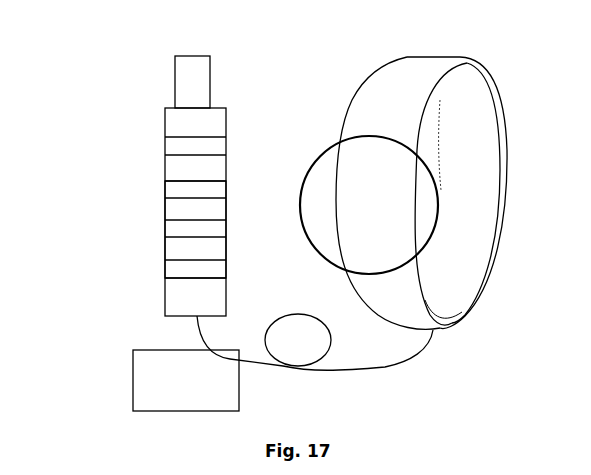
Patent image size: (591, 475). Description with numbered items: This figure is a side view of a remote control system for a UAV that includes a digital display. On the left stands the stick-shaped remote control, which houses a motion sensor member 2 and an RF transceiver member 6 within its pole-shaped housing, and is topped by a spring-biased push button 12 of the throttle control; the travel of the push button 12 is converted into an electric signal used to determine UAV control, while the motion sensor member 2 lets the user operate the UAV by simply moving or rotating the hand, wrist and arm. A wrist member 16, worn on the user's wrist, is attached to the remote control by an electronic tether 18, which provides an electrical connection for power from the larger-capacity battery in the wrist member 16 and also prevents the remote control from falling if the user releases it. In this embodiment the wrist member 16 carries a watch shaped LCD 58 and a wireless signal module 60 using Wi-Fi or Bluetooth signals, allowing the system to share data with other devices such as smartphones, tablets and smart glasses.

The motion sensor member 2 is at (180, 177).
The RF transceiver member 6 is at (180, 257).
The push button 12 is at (178, 88).
The wrist member 16 is at (445, 192).
The electronic tether 18 is at (357, 370).
The watch shaped LCD 58 is at (415, 215).
The wireless signal module 60 is at (397, 117).